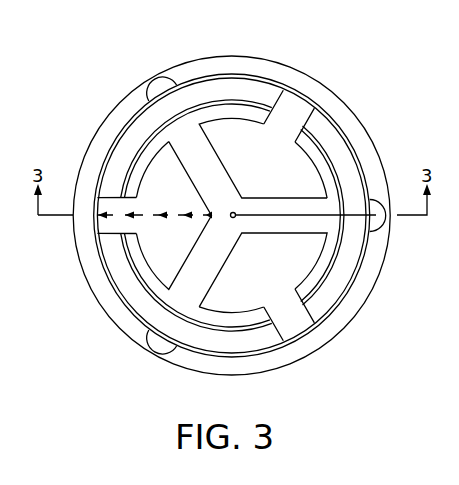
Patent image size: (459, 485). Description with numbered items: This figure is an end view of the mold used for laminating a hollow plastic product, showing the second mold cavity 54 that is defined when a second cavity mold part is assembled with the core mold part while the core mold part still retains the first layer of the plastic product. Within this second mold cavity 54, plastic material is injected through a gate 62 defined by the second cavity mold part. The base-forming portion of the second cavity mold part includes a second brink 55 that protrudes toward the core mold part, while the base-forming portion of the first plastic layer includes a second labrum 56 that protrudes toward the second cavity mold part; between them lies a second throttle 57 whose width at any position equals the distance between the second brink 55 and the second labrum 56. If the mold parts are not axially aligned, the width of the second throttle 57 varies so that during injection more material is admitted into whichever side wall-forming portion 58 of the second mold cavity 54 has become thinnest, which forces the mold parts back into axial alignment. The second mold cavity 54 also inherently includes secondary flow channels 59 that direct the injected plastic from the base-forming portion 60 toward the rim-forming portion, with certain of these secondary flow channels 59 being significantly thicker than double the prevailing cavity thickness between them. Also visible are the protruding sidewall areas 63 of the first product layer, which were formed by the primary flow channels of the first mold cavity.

The second mold cavity 54 is at (120, 320).
The second brink 55 is at (220, 122).
The second labrum 56 is at (222, 115).
The second throttle 57 is at (167, 142).
The side wall-forming portion 58 is at (148, 97).
The secondary flow channels 59 is at (112, 124).
The base-forming portion 60 is at (104, 284).
The gate 62 is at (236, 211).
The protruding sidewall areas 63 is at (162, 88).